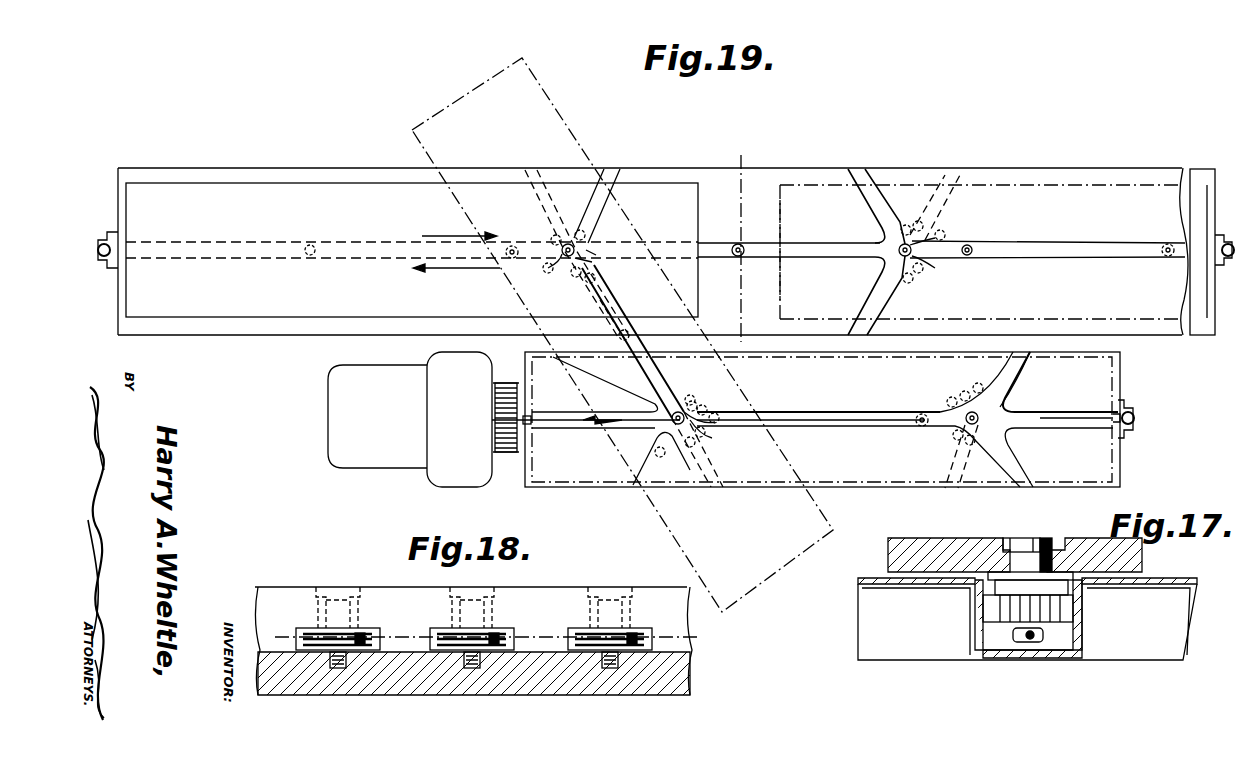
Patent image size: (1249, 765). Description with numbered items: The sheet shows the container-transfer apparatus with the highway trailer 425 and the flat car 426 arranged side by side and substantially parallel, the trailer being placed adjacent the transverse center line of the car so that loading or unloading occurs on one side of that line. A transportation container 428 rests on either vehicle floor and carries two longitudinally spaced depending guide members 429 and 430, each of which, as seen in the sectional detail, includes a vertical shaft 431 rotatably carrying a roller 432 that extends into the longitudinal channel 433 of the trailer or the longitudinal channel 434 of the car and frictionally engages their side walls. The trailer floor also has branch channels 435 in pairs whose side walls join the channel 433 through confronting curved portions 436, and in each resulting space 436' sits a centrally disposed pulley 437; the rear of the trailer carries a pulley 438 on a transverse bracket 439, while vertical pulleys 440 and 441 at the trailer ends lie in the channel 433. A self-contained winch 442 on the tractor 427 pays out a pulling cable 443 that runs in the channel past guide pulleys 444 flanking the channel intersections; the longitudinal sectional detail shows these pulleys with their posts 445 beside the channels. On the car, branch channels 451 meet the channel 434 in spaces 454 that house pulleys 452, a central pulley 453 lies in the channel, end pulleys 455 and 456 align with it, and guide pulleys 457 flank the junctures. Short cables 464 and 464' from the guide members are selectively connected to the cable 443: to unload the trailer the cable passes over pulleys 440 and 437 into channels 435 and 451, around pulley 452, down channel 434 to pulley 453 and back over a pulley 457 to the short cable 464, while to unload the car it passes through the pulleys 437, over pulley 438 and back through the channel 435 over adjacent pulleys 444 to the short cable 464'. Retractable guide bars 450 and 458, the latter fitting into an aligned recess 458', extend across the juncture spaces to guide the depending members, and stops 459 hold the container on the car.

In FIG. 19, the highway trailer 425 is at (883, 484).
In FIG. 17, the highway trailer 425 is at (1197, 580).
In FIG. 19, the flat car 426 is at (1207, 168).
In FIG. 19, the tractor 427 is at (438, 455).
In FIG. 19, the transportation container 428 is at (252, 188).
In FIG. 17, the transportation container 428 is at (945, 548).
In FIG. 19, the guide member 429 is at (316, 245).
In FIG. 17, the guide member 429 is at (1012, 540).
In FIG. 19, the guide member 430 is at (508, 258).
In FIG. 17, the vertical shaft 431 is at (1050, 538).
In FIG. 17, the roller 432 is at (983, 612).
In FIG. 19, the longitudinal channel 433 is at (833, 422).
In FIG. 17, the longitudinal channel 433 is at (998, 645).
In FIG. 19, the longitudinal channel 434 is at (712, 250).
In FIG. 19, the branch channel 435 is at (655, 378).
In FIG. 19, the curved portion 436 is at (905, 444).
In FIG. 19, the space 436' is at (705, 441).
In FIG. 19, the pulley 437 is at (668, 430).
In FIG. 19, the pulley 438 is at (1133, 412).
In FIG. 19, the transverse bracket 439 is at (1133, 424).
In FIG. 19, the vertical pulley 440 is at (540, 432).
In FIG. 19, the vertical pulley 441 is at (1110, 418).
In FIG. 19, the winch 442 is at (508, 455).
In FIG. 19, the pulling cable 443 is at (575, 423).
In FIG. 18, the pulling cable 443 is at (672, 638).
In FIG. 19, the guide pulley 444 is at (696, 404).
In FIG. 18, the guide pulley 444 is at (362, 630).
In FIG. 18, the post 445 is at (375, 580).
In FIG. 19, the movable guide member 450 is at (710, 462).
In FIG. 19, the branch channel 451 is at (620, 185).
In FIG. 19, the pulley 452 is at (578, 250).
In FIG. 19, the pulley 453 is at (765, 235).
In FIG. 19, the space 454 is at (548, 276).
In FIG. 19, the pulley 455 is at (104, 244).
In FIG. 19, the pulley 456 is at (1222, 256).
In FIG. 19, the guide pulley 457 is at (584, 228).
In FIG. 19, the retractable guide bar 458 is at (577, 215).
In FIG. 19, the recess 458' is at (611, 271).
In FIG. 19, the stop 459 is at (958, 478).
In FIG. 19, the short cable 464 is at (687, 386).
In FIG. 17, the short cable 464 is at (1061, 660).
In FIG. 19, the short cable 464' is at (780, 344).